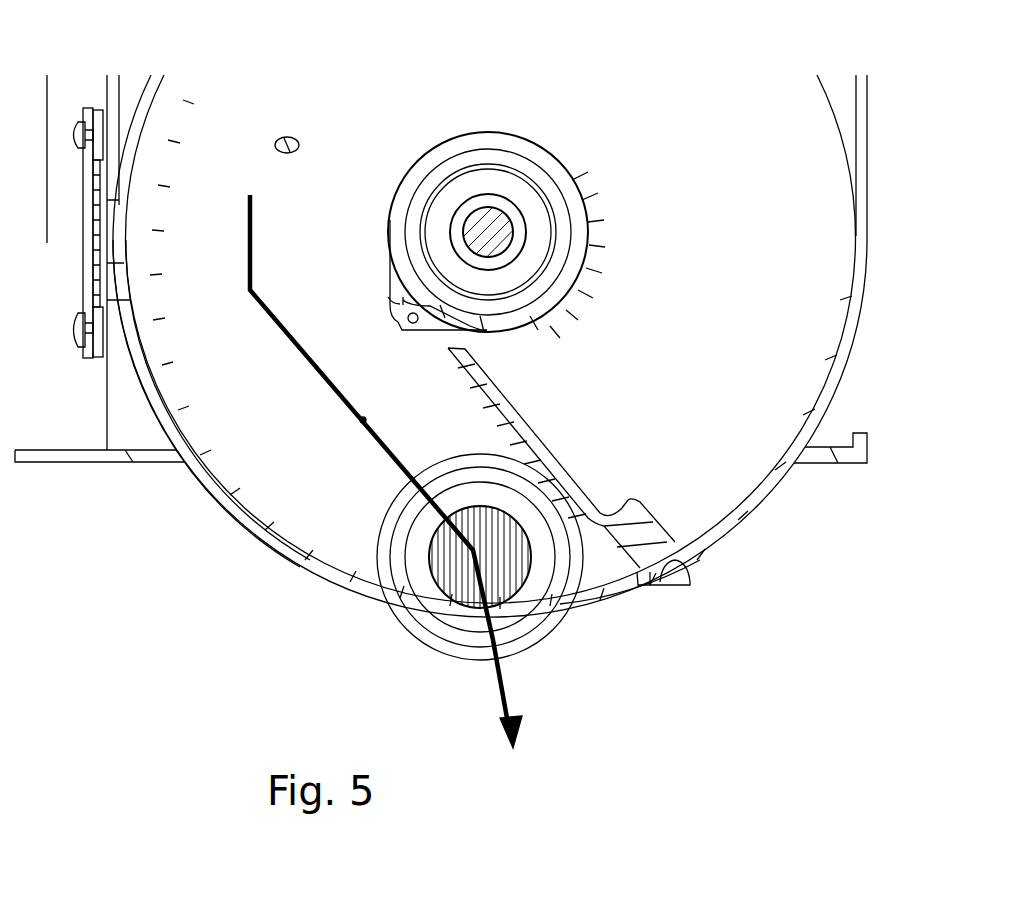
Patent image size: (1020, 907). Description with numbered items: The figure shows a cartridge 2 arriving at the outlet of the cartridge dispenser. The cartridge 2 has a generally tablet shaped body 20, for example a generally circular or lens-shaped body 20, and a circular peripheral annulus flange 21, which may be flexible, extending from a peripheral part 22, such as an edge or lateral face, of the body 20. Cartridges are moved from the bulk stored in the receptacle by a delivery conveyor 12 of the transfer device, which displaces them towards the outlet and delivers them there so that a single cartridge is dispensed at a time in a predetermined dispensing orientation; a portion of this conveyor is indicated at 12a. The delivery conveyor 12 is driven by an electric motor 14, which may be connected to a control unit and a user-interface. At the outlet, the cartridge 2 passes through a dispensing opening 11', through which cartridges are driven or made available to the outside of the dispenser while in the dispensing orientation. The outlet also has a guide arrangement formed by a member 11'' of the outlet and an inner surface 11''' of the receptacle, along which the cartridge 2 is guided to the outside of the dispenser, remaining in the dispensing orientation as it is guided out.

The cartridge 2 is at (375, 485).
The dispensing opening 11' is at (632, 653).
The member of outlet 11'' is at (569, 466).
The inner surface of receptacle 11''' is at (218, 432).
The delivery conveyor 12 is at (798, 330).
The housing wall 12a is at (282, 377).
The electric motor 14 is at (483, 220).
The tablet shaped body 20 is at (440, 563).
The circular peripheral annulus flange 21 is at (525, 632).
The peripheral part of body 22 is at (457, 460).